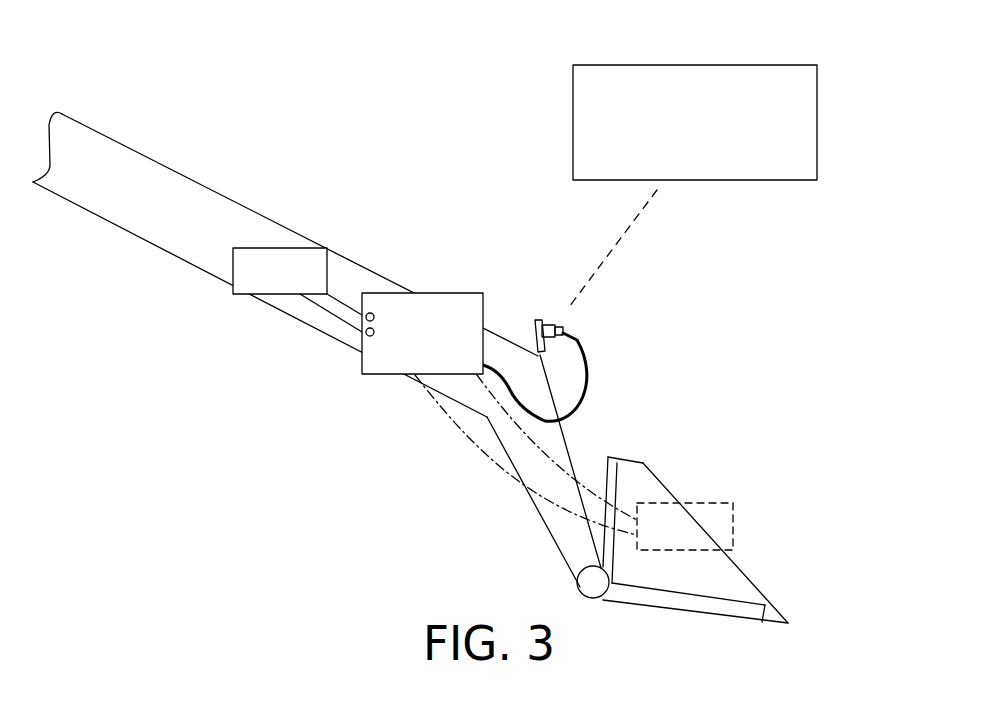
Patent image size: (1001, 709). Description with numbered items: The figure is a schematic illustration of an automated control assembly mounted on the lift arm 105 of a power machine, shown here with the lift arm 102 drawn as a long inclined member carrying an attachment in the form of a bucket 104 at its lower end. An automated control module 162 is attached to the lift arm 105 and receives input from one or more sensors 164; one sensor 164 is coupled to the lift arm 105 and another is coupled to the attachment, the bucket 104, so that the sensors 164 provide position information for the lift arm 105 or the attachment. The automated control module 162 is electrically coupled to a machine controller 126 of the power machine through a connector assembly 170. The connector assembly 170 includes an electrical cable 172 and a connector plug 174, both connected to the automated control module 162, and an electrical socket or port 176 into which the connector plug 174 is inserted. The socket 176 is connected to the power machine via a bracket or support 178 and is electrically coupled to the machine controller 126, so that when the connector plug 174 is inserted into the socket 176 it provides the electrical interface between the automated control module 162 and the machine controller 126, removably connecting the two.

The lift arm 102 is at (306, 330).
The bucket 104 is at (772, 583).
The lift arm 105 is at (107, 170).
The machine controller 126 is at (642, 65).
The automated control module 162 is at (462, 293).
The sensors 164 is at (278, 248).
The connector assembly 170 is at (622, 409).
The electrical cable 172 is at (533, 418).
The connector plug 174 is at (567, 327).
The electrical socket or port 176 is at (547, 322).
The bracket or support 178 is at (533, 332).